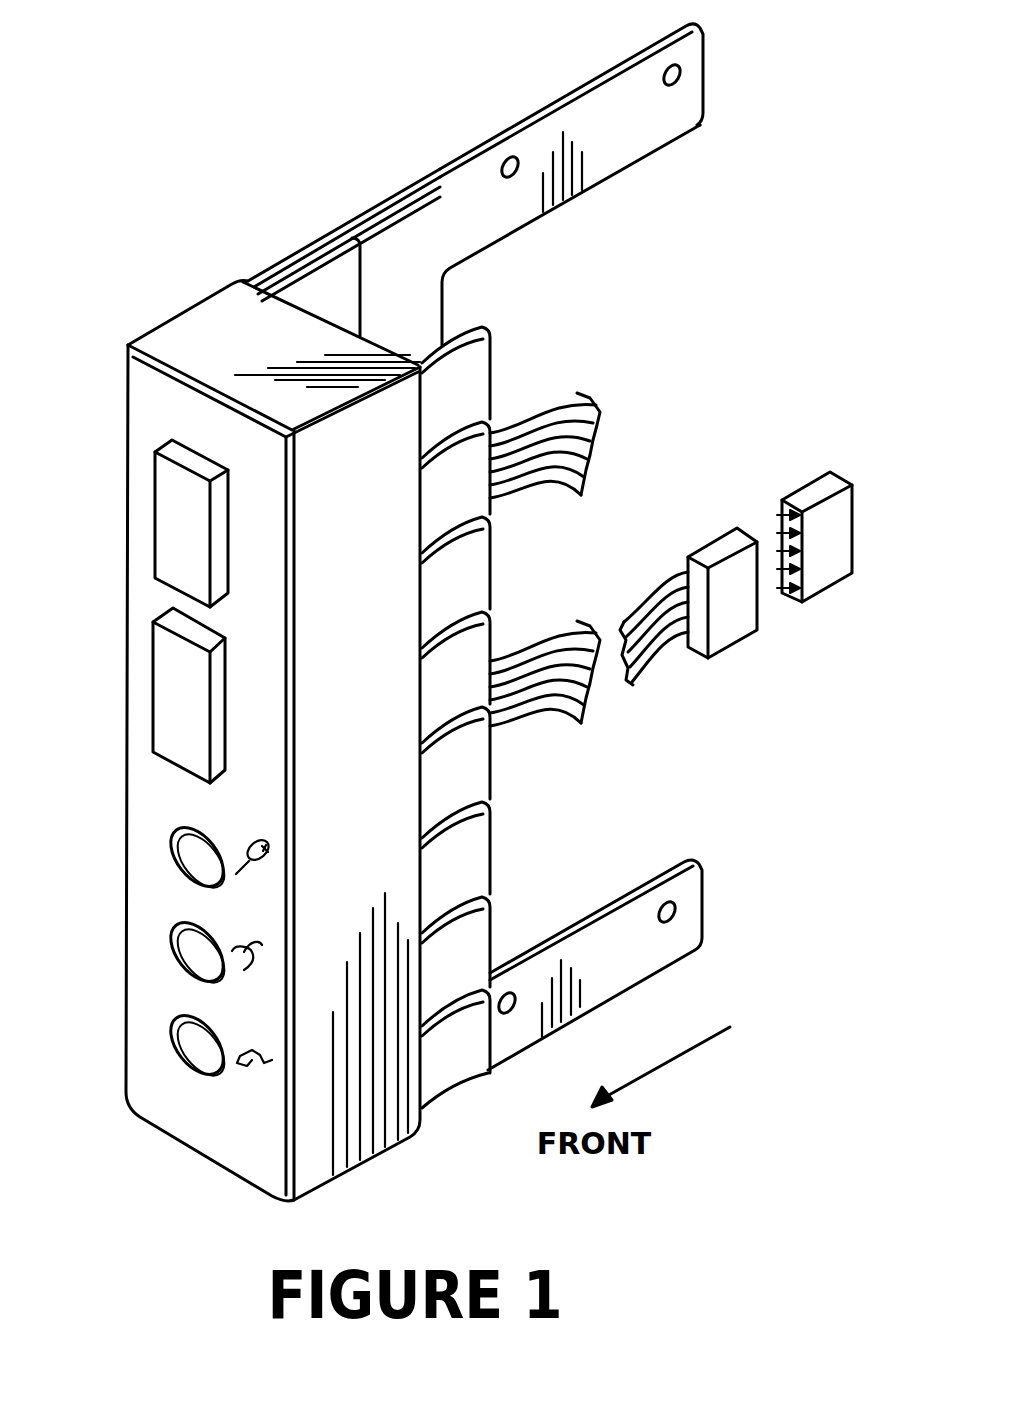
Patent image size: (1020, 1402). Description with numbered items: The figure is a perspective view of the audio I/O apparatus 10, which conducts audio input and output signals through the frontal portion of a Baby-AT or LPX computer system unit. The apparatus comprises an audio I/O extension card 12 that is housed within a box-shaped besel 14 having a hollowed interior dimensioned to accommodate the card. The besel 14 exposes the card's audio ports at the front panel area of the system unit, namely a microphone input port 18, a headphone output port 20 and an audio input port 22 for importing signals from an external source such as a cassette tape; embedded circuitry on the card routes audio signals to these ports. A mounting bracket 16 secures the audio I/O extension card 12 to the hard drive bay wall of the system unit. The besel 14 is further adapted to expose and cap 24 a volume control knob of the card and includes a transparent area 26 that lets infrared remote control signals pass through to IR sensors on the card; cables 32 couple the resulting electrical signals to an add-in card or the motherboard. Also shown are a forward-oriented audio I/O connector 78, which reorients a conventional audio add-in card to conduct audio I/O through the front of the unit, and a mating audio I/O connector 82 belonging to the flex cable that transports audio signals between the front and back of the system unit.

The audio I/O apparatus 10 is at (268, 244).
The audio I/O extension card 12 is at (338, 278).
The besel 14 is at (210, 328).
The mounting bracket 16 is at (632, 153).
The microphone input port 18 is at (187, 852).
The headphone output port 20 is at (187, 943).
The audio input port 22 is at (187, 1037).
The cap 24 is at (172, 517).
The transparent area 26 is at (173, 670).
The cables 32 is at (557, 397).
The audio I/O connector 78 is at (813, 480).
The audio I/O connector 82 is at (715, 540).